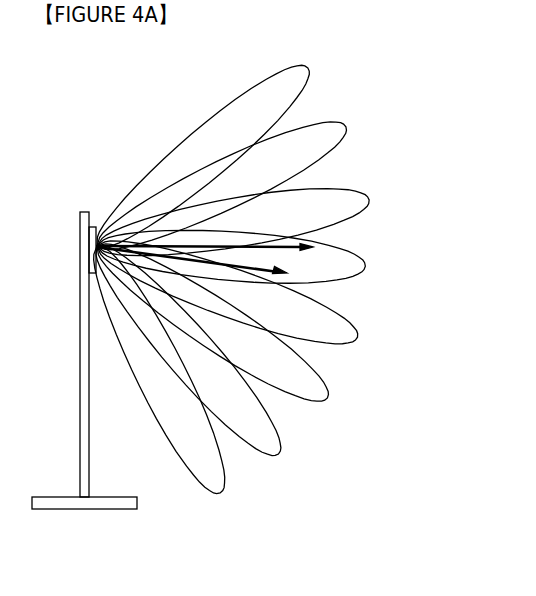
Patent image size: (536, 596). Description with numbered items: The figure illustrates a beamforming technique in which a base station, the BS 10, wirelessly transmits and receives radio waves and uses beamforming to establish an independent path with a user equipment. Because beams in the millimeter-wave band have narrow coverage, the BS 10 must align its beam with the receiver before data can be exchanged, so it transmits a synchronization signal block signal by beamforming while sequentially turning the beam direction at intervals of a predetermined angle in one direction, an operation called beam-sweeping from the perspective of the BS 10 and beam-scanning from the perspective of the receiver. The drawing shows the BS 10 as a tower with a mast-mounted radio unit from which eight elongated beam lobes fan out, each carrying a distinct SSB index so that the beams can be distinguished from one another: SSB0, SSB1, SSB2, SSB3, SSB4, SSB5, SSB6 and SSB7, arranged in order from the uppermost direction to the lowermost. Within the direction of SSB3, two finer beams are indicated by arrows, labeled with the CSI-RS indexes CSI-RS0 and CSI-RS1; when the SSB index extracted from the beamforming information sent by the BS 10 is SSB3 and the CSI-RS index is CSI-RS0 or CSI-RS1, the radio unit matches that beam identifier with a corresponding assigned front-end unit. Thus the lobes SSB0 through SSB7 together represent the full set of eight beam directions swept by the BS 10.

The BS 10 is at (143, 520).
The SSB index SSB0 is at (220, 157).
The SSB index SSB1 is at (239, 186).
The SSB index SSB2 is at (256, 223).
The SSB index SSB3 is at (266, 256).
The SSB index SSB4 is at (246, 291).
The SSB index SSB5 is at (229, 322).
The SSB index SSB6 is at (202, 354).
The SSB index SSB7 is at (169, 378).